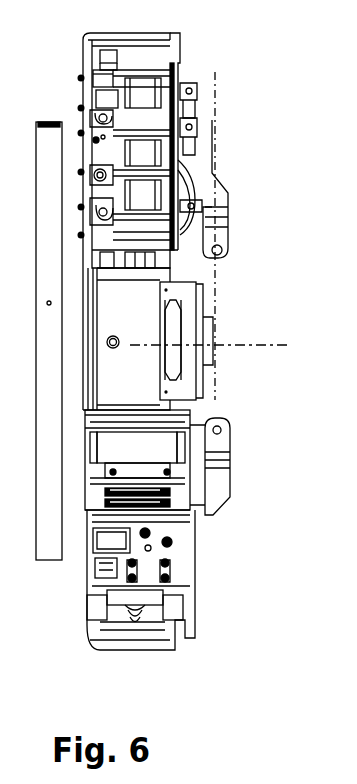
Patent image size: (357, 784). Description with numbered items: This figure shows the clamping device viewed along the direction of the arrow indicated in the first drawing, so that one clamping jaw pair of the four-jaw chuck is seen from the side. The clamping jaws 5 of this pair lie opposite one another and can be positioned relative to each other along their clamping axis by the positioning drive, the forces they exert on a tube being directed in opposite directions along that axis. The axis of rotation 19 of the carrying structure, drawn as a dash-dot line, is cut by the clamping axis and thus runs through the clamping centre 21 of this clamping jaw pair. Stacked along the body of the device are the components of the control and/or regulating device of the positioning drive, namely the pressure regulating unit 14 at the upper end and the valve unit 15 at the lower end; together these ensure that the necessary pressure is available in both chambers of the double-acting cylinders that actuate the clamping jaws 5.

The pressure regulating unit 14 is at (172, 68).
The clamping jaw 5 is at (232, 220).
The clamping centre 21 is at (219, 343).
The axis of rotation 19 is at (267, 349).
The valve unit 15 is at (200, 567).